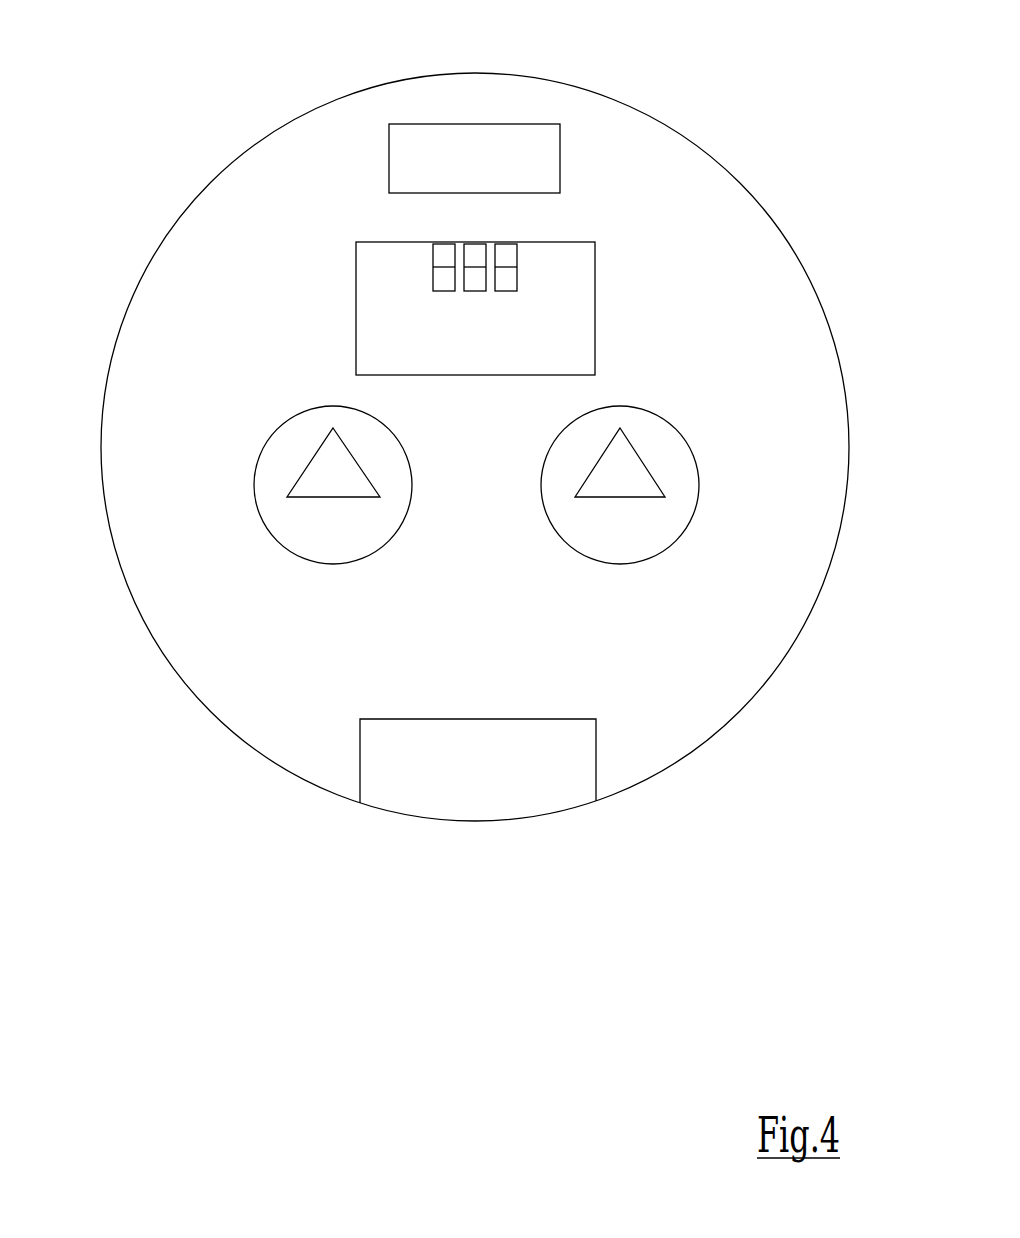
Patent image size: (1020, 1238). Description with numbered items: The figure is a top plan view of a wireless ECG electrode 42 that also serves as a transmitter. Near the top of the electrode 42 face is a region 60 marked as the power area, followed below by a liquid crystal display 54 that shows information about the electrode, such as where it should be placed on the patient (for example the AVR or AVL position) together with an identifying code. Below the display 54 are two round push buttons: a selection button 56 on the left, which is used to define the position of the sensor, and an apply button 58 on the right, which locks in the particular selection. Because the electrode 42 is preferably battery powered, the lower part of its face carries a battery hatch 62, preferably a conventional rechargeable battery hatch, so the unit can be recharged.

The wireless electrode 42 is at (197, 193).
The liquid crystal display 54 is at (583, 290).
The selection button 56 is at (275, 447).
The apply button 58 is at (676, 447).
The power indicator 60 is at (466, 135).
The battery hatch 62 is at (571, 780).